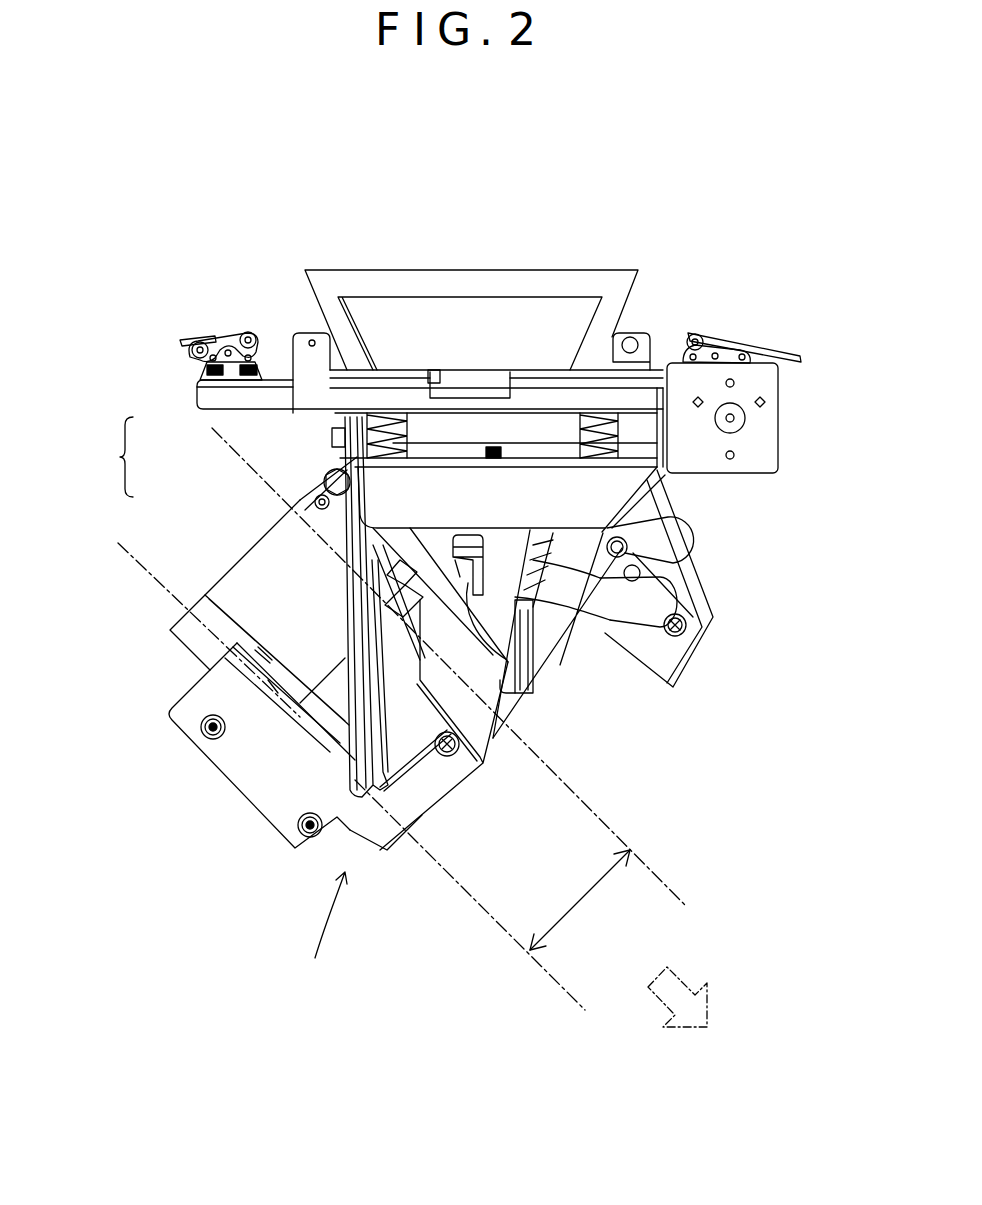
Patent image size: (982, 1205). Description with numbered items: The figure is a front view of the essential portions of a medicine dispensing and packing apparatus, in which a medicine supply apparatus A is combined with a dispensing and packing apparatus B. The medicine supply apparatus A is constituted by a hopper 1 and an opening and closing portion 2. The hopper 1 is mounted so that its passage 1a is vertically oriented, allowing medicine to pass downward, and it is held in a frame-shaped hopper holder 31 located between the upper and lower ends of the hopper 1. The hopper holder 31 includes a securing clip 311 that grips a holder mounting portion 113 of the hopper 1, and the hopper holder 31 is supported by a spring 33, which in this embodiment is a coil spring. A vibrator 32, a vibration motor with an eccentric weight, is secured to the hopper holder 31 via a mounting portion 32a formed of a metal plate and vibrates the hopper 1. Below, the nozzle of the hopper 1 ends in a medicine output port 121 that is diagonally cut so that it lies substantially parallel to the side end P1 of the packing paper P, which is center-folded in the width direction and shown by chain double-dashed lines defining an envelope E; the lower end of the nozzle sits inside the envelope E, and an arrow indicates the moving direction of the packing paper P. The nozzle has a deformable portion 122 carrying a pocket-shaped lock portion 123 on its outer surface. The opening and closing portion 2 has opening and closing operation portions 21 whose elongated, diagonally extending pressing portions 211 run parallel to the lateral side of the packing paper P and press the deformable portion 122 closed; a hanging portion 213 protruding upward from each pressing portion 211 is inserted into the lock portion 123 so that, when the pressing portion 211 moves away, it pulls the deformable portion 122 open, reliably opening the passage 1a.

The passage 1a is at (473, 320).
The holder mounting portion 113 is at (407, 367).
The hopper holder 31 is at (530, 397).
The spring 33 is at (597, 427).
The securing clip 311 is at (237, 337).
The vibrator 32 is at (758, 366).
The mounting portion 32a is at (758, 383).
The hopper 1 is at (383, 333).
The opening and closing portion 2 is at (377, 582).
The medicine supply apparatus A is at (120, 457).
The lock portion 123 is at (470, 551).
The hanging portion 213 is at (507, 597).
The deformable portion 122 is at (600, 628).
The opening and closing operation portion 21 is at (328, 731).
The pressing portion 211 is at (308, 748).
The medicine output port 121 is at (420, 680).
The dispensing and packing apparatus B is at (323, 932).
The side end P1 is at (607, 822).
The packing paper P is at (640, 888).
The envelope E is at (578, 905).